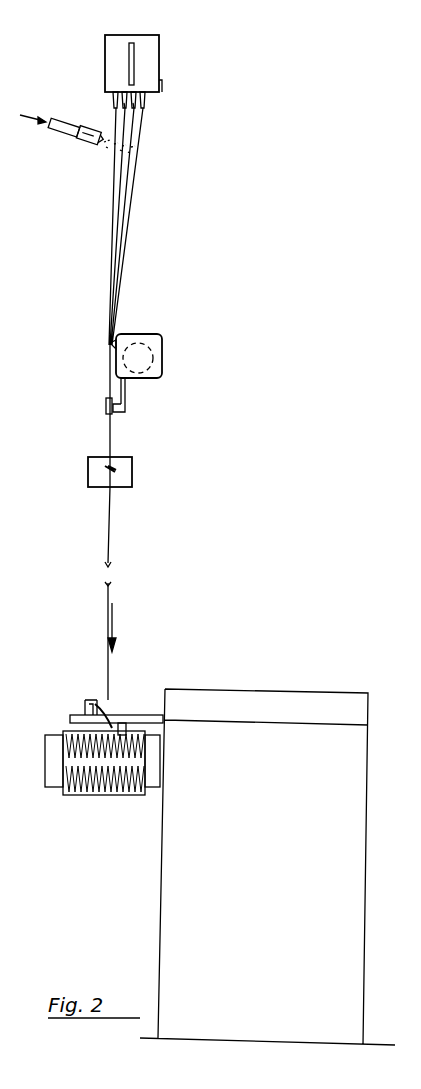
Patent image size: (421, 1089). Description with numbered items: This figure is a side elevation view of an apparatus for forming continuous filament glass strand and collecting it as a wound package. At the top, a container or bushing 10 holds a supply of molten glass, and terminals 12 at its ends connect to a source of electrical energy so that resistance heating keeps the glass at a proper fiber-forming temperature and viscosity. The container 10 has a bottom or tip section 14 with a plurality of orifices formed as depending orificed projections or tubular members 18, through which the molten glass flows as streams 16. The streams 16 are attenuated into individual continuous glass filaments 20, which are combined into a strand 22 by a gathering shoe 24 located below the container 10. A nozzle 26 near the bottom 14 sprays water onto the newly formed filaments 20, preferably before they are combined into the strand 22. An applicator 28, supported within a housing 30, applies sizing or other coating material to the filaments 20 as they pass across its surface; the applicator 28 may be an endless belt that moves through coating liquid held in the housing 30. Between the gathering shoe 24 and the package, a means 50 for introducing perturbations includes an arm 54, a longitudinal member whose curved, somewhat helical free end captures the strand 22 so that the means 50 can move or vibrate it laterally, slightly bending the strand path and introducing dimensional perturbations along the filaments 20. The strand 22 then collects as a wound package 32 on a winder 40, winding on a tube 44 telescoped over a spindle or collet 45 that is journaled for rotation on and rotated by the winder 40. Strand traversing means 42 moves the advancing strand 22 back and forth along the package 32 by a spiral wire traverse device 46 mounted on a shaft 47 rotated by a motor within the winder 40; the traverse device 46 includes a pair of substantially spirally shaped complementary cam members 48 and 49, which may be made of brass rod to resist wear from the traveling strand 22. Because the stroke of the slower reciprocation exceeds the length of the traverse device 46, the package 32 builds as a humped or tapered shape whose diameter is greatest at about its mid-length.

The container or bushing 10 is at (162, 38).
The terminals 12 is at (134, 65).
The bottom or tip section 14 is at (162, 82).
The streams of molten glass 16 is at (136, 104).
The tubular members 18 is at (114, 97).
The continuous glass filaments 20 is at (120, 196).
The strand 22 is at (109, 420).
The gathering shoe 24 is at (106, 404).
The nozzle 26 is at (73, 142).
The applicator 28 is at (118, 345).
The housing 30 is at (162, 345).
The wound package 32 is at (88, 795).
The winder 40 is at (322, 687).
The strand traversing means 42 is at (114, 700).
The tube 44 is at (62, 786).
The spindle or collet 45 is at (45, 760).
The spiral wire traverse device 46 is at (122, 723).
The shaft 47 is at (70, 718).
The cam member 48 is at (85, 702).
The cam member 49 is at (97, 705).
The means for introducing perturbations 50 is at (134, 460).
The arm 54 is at (106, 468).